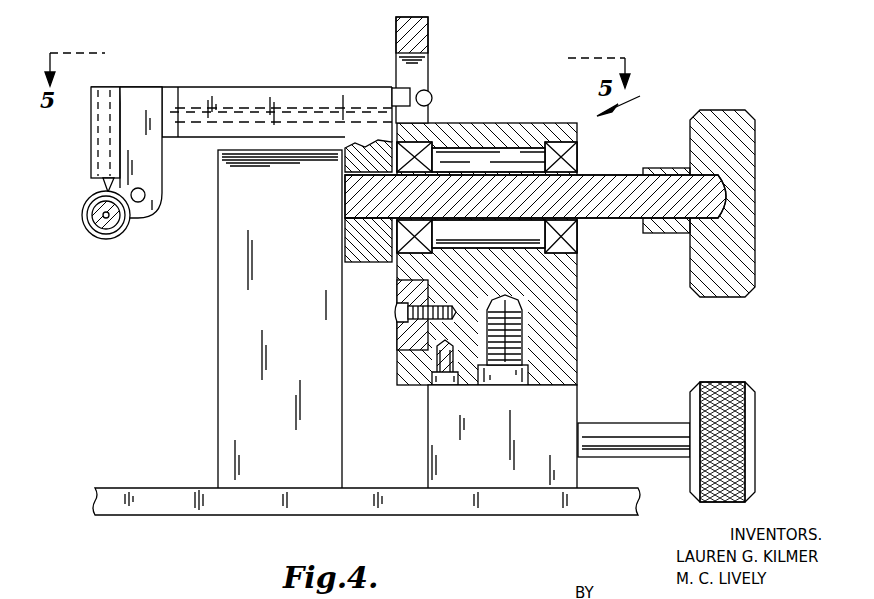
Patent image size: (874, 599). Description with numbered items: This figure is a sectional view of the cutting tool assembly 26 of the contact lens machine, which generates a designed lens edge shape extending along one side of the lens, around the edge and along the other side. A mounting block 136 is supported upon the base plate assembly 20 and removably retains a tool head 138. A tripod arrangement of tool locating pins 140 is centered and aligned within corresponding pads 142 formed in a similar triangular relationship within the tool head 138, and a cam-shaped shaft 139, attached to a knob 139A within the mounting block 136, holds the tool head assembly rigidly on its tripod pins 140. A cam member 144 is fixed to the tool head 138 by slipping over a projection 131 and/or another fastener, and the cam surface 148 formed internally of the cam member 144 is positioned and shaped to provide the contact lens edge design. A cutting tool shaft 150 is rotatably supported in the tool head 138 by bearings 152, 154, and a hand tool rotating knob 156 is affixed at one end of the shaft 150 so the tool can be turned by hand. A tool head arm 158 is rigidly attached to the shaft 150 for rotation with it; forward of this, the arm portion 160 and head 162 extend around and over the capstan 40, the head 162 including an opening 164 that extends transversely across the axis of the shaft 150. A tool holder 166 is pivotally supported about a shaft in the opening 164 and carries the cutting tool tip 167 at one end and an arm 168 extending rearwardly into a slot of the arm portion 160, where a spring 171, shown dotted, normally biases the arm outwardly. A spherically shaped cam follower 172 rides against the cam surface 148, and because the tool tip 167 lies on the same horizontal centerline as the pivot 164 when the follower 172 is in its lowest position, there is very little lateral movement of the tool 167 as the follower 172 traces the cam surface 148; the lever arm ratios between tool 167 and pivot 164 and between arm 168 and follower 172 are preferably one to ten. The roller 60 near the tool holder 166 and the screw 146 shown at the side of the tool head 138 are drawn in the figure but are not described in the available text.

The base plate assembly 20 is at (628, 490).
The cutting tool assembly 26 is at (629, 99).
The capstan 40 is at (290, 322).
The roller 60 is at (82, 222).
The projection 131 is at (410, 342).
The mounting block 136 is at (578, 480).
The tool head 138 is at (580, 326).
The shaft 139 is at (612, 423).
The knob 139A is at (758, 410).
The tool locating pins 140 is at (446, 386).
The pads 142 is at (432, 374).
The cam member 144 is at (432, 34).
The screw 146 is at (396, 311).
The cam surface 148 is at (430, 68).
The cutting tool shaft 150 is at (620, 178).
The bearing 152 is at (580, 152).
The bearing 154 is at (436, 157).
The hand tool rotating knob 156 is at (758, 258).
The tool head arm 158 is at (390, 264).
The arm portion 160 is at (253, 87).
The head 162 is at (150, 92).
The opening 164 is at (145, 194).
The tool holder 166 is at (115, 87).
The cutting tool tip 167 is at (100, 187).
The arm 168 is at (398, 90).
The spring 171 is at (302, 112).
The cam follower 172 is at (433, 98).